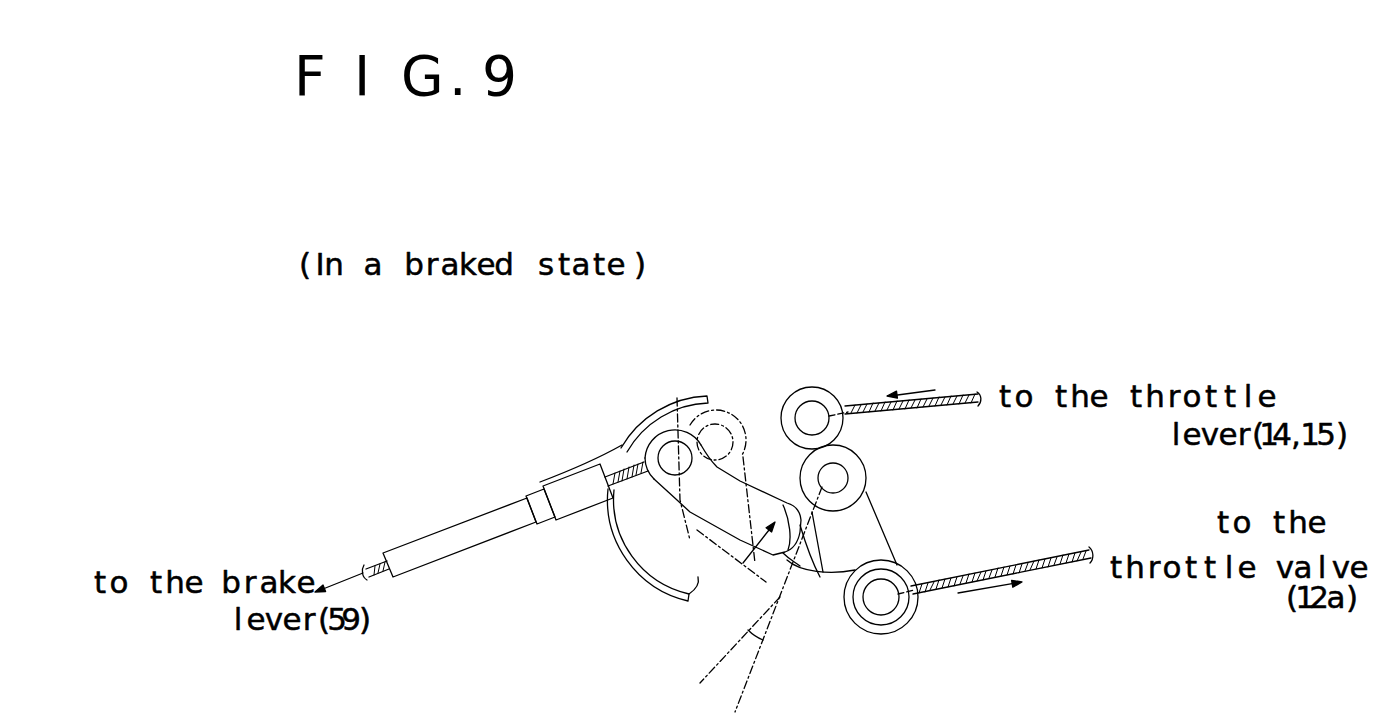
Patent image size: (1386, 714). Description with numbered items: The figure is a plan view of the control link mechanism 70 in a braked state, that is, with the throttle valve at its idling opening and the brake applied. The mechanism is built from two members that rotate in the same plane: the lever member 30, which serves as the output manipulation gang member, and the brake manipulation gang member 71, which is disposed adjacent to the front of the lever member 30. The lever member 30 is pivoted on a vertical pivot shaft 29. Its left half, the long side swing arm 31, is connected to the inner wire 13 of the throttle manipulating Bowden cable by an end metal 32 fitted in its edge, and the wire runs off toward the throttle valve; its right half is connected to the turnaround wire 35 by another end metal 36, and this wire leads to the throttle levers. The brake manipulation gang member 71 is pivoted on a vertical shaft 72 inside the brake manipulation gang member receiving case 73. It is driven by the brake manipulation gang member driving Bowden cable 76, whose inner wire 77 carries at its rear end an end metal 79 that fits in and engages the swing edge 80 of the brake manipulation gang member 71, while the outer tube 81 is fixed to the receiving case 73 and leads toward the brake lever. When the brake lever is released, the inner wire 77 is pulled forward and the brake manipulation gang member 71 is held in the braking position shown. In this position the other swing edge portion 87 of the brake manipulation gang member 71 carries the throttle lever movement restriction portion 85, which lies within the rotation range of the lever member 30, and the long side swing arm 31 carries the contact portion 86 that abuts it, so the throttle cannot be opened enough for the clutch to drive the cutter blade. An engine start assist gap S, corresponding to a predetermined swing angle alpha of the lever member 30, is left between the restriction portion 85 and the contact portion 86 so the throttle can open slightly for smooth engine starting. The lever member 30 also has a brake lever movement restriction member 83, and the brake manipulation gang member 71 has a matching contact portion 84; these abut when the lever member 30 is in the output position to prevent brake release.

The inner wire 13 is at (1003, 572).
The pivot shaft 29 is at (833, 478).
The lever member 30 is at (872, 483).
The long side swing arm 31 is at (868, 538).
The end metal 32 is at (881, 600).
The turnaround wire 35 is at (945, 396).
The end metal 36 is at (812, 418).
The control link mechanism 70 is at (767, 347).
The brake manipulation gang member 71 is at (672, 513).
The vertical shaft 72 is at (657, 548).
The brake manipulation gang member receiving case 73 is at (623, 445).
The brake manipulation gang member driving Bowden cable 76 is at (473, 447).
The inner wire 77 is at (376, 562).
The end metal 79 is at (675, 455).
The swing edge 80 is at (662, 440).
The outer tube 81 is at (446, 542).
The brake lever movement restriction member 83 is at (827, 573).
The contact portion 84 is at (753, 420).
The throttle lever movement restriction portion 85 is at (797, 560).
The contact portion 86 is at (803, 557).
The other swing edge portion 87 is at (783, 510).
The engine start assist gap S is at (765, 578).
The swing angle alpha is at (761, 599).